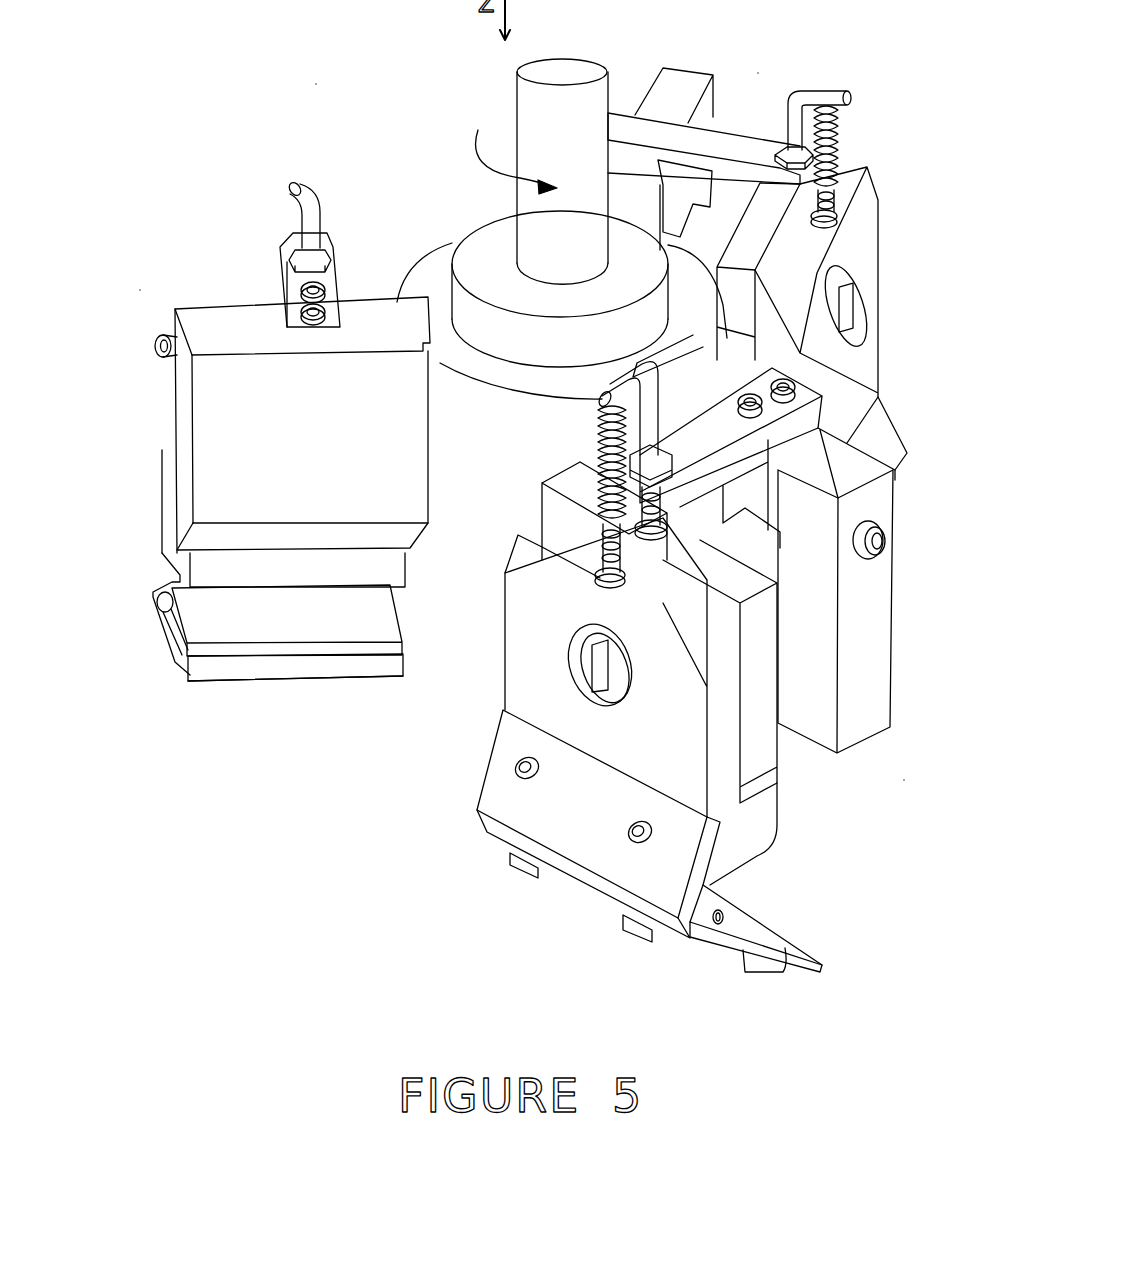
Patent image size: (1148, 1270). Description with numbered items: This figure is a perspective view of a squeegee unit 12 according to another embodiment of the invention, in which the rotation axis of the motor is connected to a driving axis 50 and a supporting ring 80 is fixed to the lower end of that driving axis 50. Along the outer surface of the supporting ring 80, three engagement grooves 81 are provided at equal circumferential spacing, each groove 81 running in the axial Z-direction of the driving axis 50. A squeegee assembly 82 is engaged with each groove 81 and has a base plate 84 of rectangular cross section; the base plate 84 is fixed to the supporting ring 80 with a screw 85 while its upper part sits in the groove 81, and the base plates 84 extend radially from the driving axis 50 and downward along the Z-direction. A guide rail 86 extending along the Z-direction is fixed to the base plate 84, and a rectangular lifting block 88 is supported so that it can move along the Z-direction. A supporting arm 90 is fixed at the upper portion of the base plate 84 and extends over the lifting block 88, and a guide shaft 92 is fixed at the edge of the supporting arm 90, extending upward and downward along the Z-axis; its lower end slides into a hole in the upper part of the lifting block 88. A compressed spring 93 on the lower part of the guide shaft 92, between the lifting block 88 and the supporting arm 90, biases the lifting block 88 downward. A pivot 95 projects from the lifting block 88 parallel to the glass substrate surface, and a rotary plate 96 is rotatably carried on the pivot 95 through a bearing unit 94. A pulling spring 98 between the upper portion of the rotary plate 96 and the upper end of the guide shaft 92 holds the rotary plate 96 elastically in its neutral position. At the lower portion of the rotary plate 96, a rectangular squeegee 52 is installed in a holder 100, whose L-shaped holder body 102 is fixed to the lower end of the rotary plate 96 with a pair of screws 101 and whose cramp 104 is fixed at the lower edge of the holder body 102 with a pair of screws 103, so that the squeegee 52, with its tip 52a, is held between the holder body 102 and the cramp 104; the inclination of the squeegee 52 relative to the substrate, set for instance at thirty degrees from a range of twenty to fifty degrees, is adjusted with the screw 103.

The squeegee unit 12 is at (316, 82).
The driving axis 50 is at (524, 116).
The squeegee 52 is at (200, 685).
The gripper finger tip 52a is at (307, 680).
The supporting ring 80 is at (492, 447).
The engagement groove 81 is at (418, 322).
The squeegee assembly 82 is at (138, 290).
The base plate 84 is at (222, 315).
The screw 85 is at (160, 350).
The guide rail 86 is at (757, 482).
The lifting block 88 is at (757, 222).
The supporting arm 90 is at (279, 258).
The guide shaft 92 is at (306, 210).
The compressed spring 93 is at (655, 535).
The bearing unit 94 is at (577, 647).
The pivot 95 is at (860, 310).
The rotary plate 96 is at (872, 210).
The pulling spring 98 is at (838, 152).
The holder 100 is at (446, 796).
The screw 101 is at (516, 762).
The holder body 102 is at (264, 625).
The screw 103 is at (512, 860).
The cramp 104 is at (160, 636).